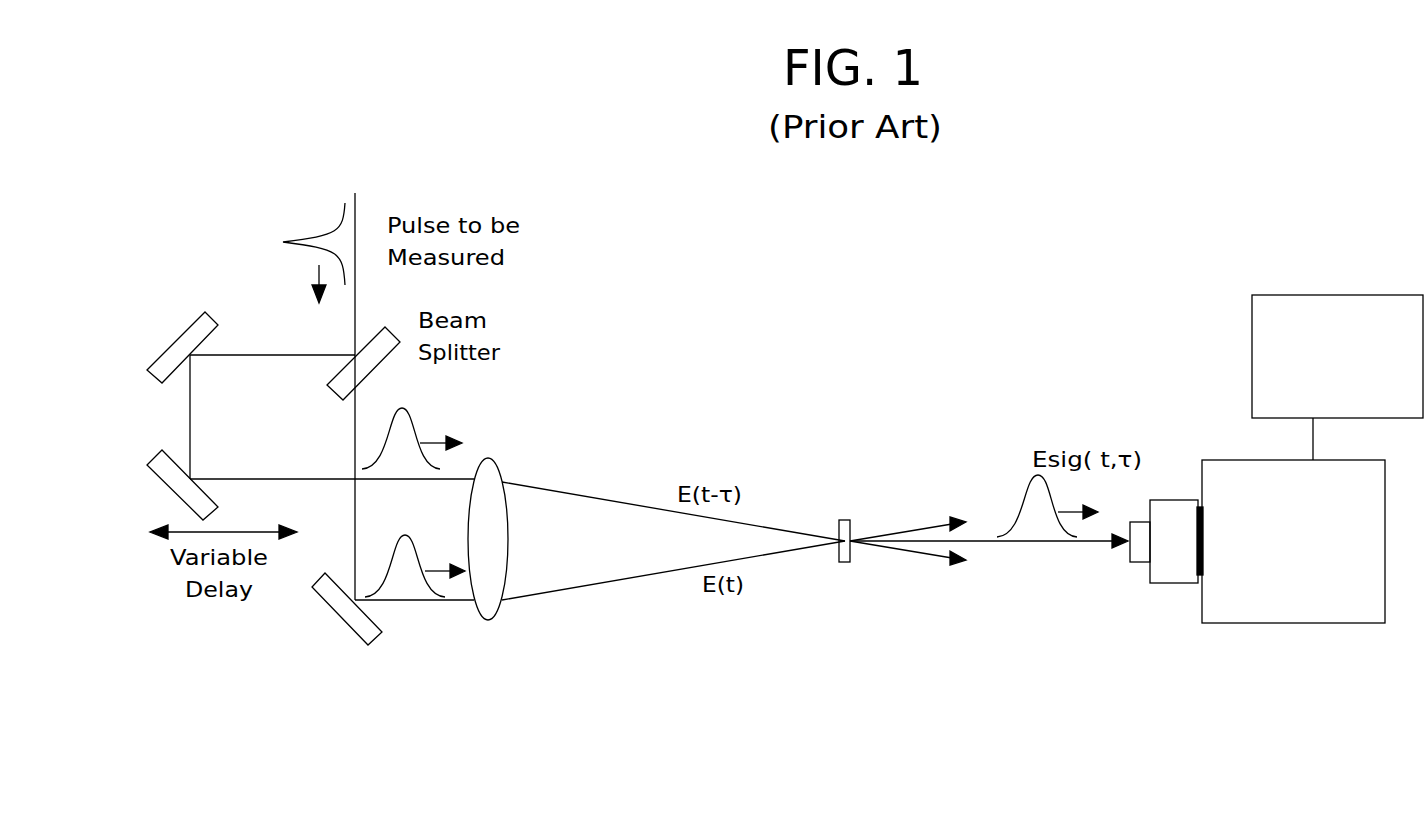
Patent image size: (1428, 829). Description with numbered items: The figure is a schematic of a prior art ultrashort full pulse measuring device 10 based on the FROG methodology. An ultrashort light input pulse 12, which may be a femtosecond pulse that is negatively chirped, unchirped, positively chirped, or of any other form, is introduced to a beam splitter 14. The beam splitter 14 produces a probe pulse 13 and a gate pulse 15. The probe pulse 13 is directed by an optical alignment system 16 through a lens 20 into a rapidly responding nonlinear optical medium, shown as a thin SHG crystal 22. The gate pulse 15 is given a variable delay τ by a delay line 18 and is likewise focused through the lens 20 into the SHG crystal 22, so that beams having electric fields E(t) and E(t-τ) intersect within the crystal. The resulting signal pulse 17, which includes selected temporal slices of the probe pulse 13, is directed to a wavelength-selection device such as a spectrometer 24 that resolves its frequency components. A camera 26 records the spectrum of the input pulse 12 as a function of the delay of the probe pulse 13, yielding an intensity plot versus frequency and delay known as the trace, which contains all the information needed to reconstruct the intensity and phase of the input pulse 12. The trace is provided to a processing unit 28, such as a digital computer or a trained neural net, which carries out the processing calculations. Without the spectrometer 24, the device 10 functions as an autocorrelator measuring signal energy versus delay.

The ultrashort full pulse measuring device 10 is at (450, 786).
The input pulse 12 is at (286, 232).
The probe pulse 13 is at (409, 535).
The beam splitter 14 is at (343, 388).
The gate pulse 15 is at (418, 430).
The optical alignment system 16 is at (333, 600).
The signal pulse 17 is at (1021, 500).
The delay line 18 is at (200, 463).
The lens 20 is at (490, 481).
The SHG crystal 22 is at (850, 527).
The spectrometer 24 is at (1293, 541).
The camera 26 is at (1172, 562).
The processing unit 28 is at (1337, 377).